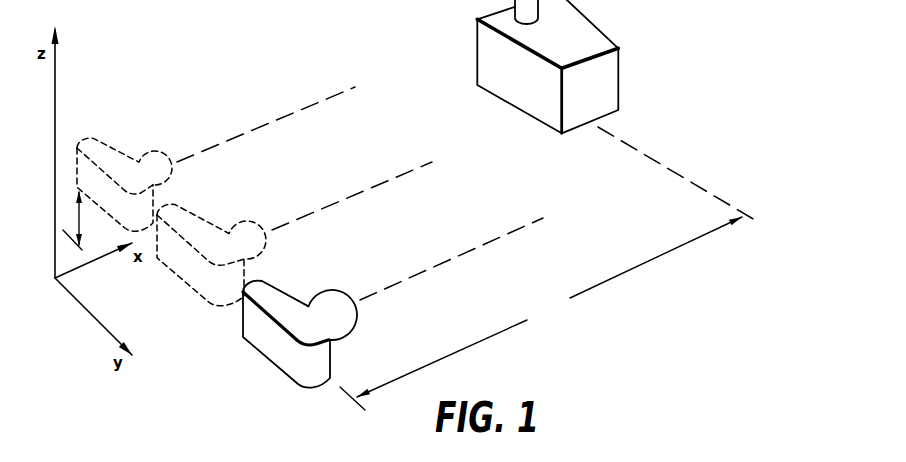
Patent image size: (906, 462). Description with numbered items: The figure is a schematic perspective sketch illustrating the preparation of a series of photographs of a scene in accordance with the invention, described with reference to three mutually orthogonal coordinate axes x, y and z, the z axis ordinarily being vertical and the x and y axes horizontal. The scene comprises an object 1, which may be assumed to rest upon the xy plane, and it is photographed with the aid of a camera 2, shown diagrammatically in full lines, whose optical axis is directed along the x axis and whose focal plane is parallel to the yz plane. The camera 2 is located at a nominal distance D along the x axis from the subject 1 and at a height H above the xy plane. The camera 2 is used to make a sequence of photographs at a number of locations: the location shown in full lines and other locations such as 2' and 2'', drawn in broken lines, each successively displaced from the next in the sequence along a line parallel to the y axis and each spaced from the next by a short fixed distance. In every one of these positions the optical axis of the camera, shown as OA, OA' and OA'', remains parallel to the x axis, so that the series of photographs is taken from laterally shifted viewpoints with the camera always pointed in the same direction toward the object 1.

The object 1 is at (594, 22).
The camera 2 is at (300, 320).
The camera location 2' is at (211, 242).
The camera location 2'' is at (124, 168).
The optical axis OA is at (451, 259).
The optical axis OA' is at (367, 196).
The optical axis OA'' is at (272, 124).
The nominal distance D is at (550, 268).
The height H is at (79, 220).